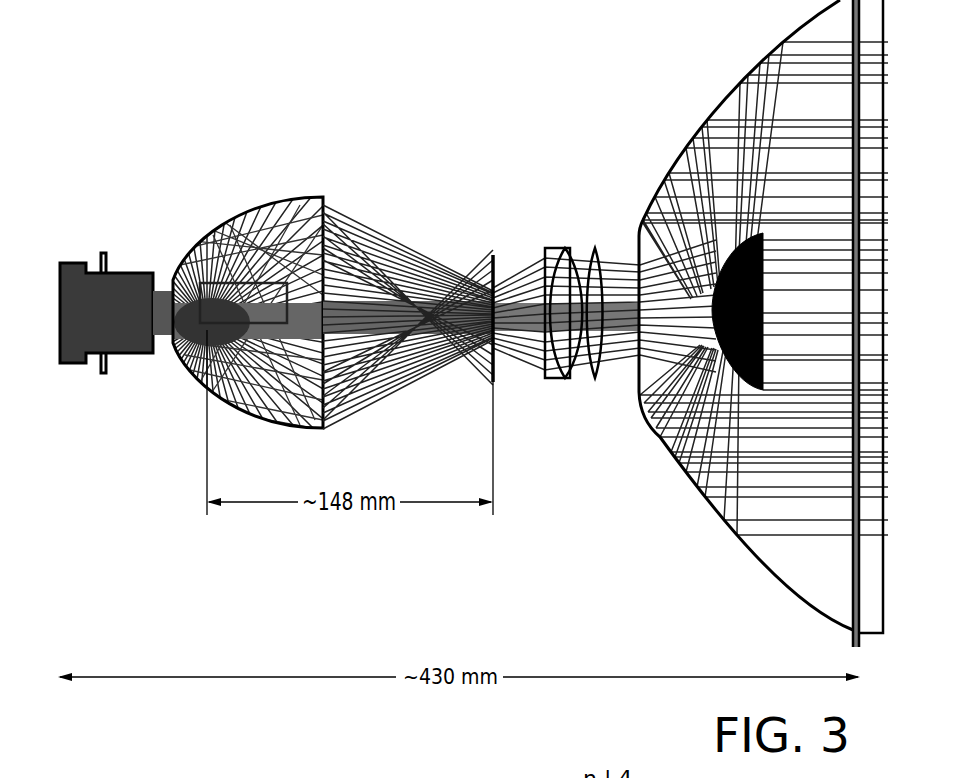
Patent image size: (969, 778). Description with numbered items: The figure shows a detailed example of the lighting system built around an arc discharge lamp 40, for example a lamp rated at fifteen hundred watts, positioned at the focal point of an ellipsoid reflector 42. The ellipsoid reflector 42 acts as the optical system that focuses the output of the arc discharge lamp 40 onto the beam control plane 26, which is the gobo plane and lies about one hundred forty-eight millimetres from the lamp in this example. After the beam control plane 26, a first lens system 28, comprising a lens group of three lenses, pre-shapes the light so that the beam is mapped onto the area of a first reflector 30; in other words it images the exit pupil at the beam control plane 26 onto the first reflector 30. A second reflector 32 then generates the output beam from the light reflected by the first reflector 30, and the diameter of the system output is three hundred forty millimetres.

The arc discharge lamp 40 is at (77, 262).
The ellipsoid reflector 42 is at (236, 220).
The beam control plane 26 is at (493, 252).
The first lens system 28 is at (575, 228).
The second reflector 32 is at (722, 103).
The first reflector 30 is at (732, 352).